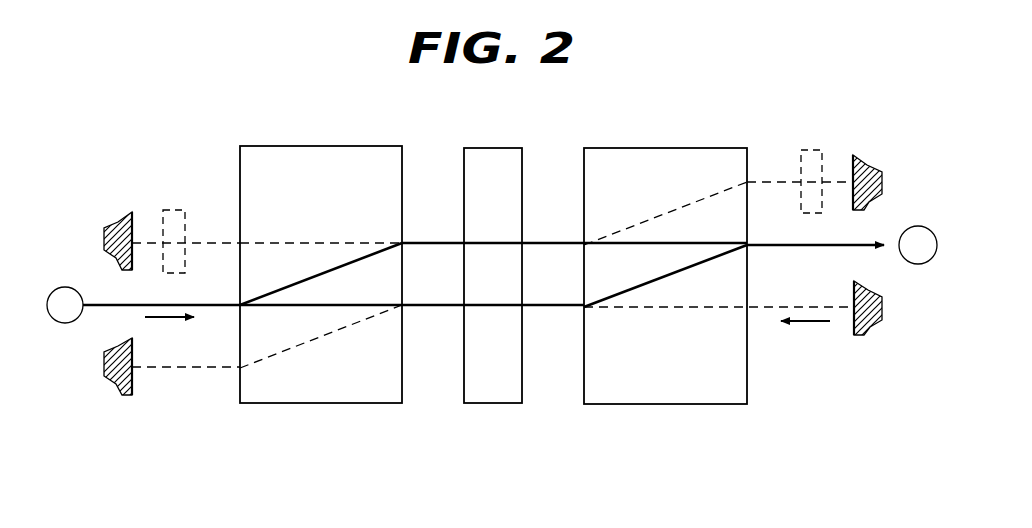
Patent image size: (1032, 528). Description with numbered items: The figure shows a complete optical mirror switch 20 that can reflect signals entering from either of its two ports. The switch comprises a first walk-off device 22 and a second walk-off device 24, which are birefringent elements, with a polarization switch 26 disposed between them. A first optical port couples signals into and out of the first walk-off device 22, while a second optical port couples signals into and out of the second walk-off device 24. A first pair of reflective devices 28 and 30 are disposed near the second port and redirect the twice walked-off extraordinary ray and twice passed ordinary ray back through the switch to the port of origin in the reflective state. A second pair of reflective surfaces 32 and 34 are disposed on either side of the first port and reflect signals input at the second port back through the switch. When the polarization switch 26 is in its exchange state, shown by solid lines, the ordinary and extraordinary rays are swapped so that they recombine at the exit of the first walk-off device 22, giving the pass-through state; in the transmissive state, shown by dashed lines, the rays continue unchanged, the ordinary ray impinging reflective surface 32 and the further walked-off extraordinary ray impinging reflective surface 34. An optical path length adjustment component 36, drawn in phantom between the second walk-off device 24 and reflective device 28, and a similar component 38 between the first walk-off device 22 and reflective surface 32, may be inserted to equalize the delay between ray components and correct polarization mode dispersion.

The optical mirror switch 20 is at (492, 304).
The first walk-off device 22 is at (307, 146).
The second walk-off device 24 is at (685, 148).
The polarization switch 26 is at (464, 180).
The reflective device 28 is at (863, 166).
The reflective device 30 is at (862, 327).
The reflective surface 32 is at (122, 215).
The reflective surface 34 is at (116, 386).
The optical path length adjustment component 36 is at (812, 149).
The optical path length adjustment component 38 is at (186, 211).